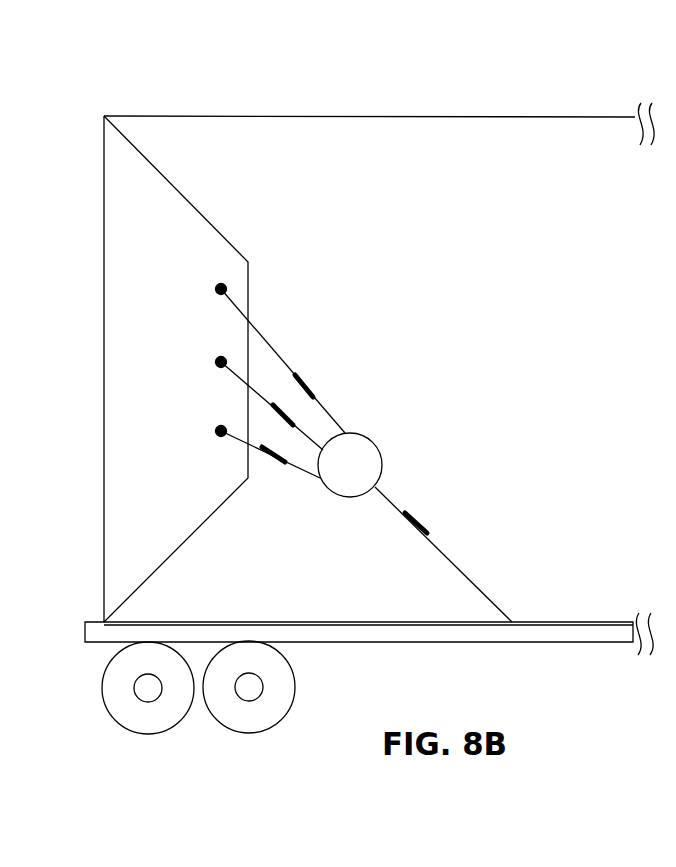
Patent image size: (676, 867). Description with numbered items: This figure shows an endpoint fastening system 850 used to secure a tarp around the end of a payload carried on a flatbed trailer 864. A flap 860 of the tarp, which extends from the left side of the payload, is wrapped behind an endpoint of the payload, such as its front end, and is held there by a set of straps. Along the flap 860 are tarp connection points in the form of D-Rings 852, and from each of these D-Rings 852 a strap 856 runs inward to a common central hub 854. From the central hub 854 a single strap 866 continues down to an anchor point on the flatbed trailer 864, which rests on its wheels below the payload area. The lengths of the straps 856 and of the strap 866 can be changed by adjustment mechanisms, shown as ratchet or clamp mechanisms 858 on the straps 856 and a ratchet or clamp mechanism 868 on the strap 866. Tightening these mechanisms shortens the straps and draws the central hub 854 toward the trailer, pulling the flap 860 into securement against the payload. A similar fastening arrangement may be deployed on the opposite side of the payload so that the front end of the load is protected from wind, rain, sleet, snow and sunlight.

The endpoint fastening system 850 is at (440, 98).
The D-Rings 852 is at (216, 285).
The central hub 854 is at (373, 442).
The straps 856 is at (258, 446).
The ratchet or clamp mechanisms 858 is at (308, 377).
The flap 860 is at (112, 222).
The flatbed trailer 864 is at (95, 632).
The strap 866 is at (393, 497).
The ratchet or clamp mechanism 868 is at (413, 517).